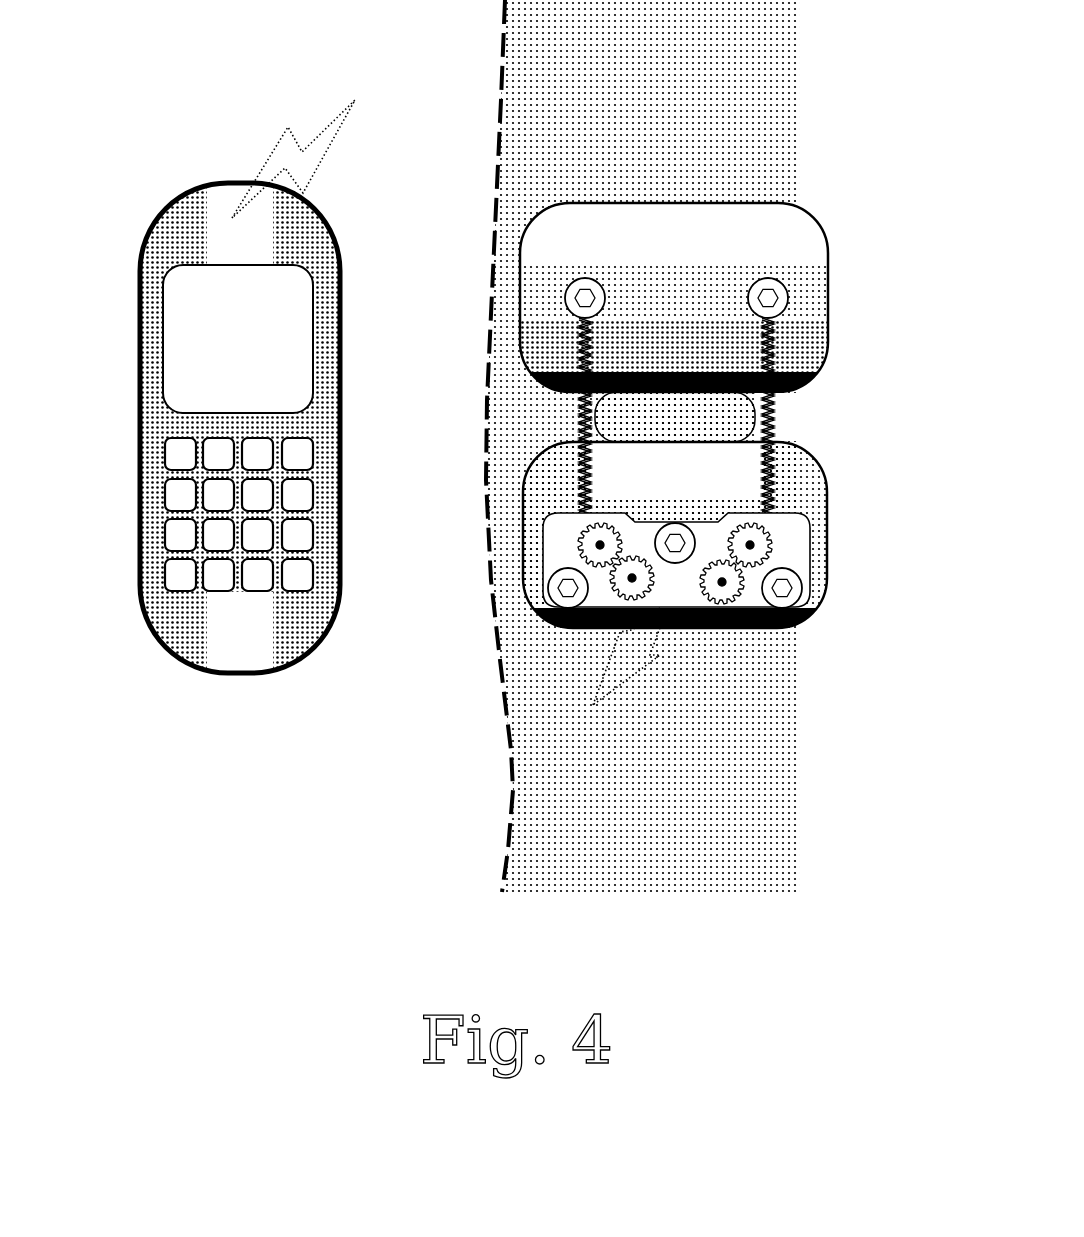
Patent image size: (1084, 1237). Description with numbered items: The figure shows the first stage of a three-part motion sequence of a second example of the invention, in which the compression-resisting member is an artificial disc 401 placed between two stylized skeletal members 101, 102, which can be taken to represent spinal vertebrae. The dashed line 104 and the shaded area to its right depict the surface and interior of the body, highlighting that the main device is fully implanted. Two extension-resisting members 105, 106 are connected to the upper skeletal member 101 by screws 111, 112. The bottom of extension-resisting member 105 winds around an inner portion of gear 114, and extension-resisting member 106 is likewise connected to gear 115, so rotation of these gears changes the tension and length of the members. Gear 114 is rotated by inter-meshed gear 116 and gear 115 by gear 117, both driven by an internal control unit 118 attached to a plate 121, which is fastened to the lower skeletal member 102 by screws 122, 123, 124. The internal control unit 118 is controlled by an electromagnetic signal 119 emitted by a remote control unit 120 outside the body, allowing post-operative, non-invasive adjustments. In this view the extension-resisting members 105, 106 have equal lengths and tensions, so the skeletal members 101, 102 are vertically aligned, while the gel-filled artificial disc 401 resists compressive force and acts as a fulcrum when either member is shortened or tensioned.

The skeletal member 101 is at (545, 302).
The skeletal member 102 is at (535, 520).
The dashed line 104 is at (500, 85).
The extension-resisting member 105 is at (587, 497).
The extension-resisting member 106 is at (770, 497).
The screw 111 is at (580, 295).
The screw 112 is at (768, 297).
The gear 114 is at (590, 548).
The gear 115 is at (762, 548).
The gear 116 is at (570, 627).
The gear 117 is at (742, 588).
The internal control unit 118 is at (682, 625).
The electromagnetic signal 119 is at (283, 152).
The remote control unit 120 is at (185, 225).
The plate 121 is at (792, 535).
The screw 122 is at (565, 590).
The screw 123 is at (680, 548).
The screw 124 is at (782, 590).
The artificial disc 401 is at (680, 422).